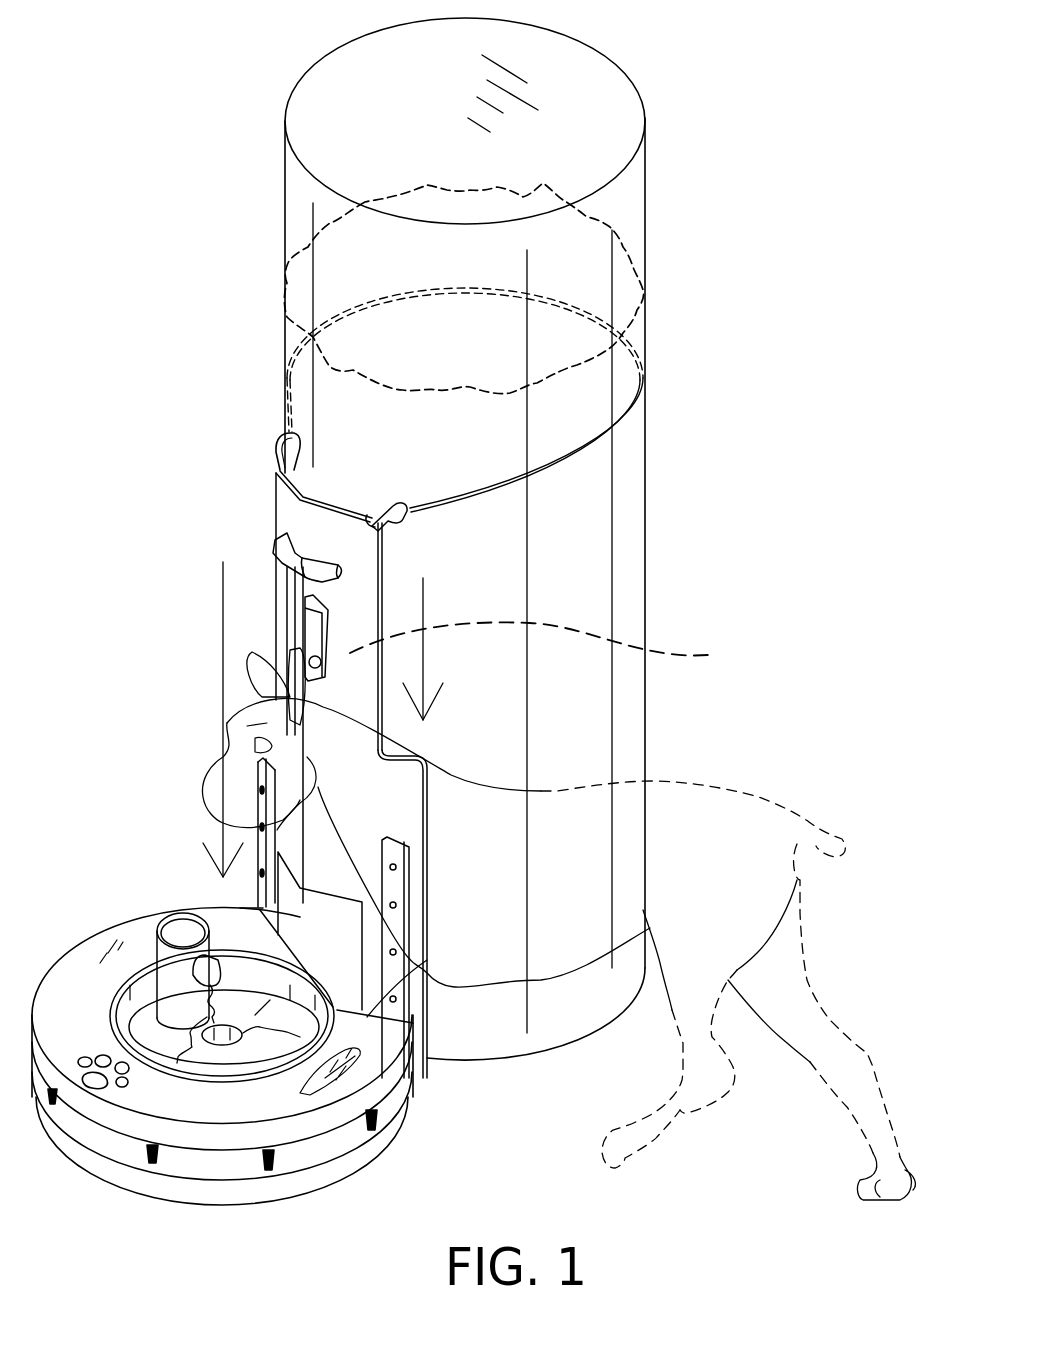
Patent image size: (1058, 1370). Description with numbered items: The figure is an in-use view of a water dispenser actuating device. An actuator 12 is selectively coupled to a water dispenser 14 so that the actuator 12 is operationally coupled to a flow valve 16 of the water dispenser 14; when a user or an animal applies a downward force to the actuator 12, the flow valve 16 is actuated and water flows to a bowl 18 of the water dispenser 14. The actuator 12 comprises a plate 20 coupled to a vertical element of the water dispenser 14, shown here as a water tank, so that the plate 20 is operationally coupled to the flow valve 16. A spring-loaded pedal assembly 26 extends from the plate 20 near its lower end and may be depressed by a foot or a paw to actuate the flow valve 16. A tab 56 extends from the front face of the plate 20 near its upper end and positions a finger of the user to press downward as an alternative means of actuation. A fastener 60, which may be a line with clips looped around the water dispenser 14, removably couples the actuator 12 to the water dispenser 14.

The actuator 12 is at (227, 928).
The water dispenser 14 is at (645, 490).
The flow valve 16 is at (710, 643).
The bowl 18 is at (147, 1000).
The plate 20 is at (275, 503).
The pedal assembly 26 is at (372, 1123).
The tab 56 is at (273, 547).
The fastener 60 is at (629, 402).